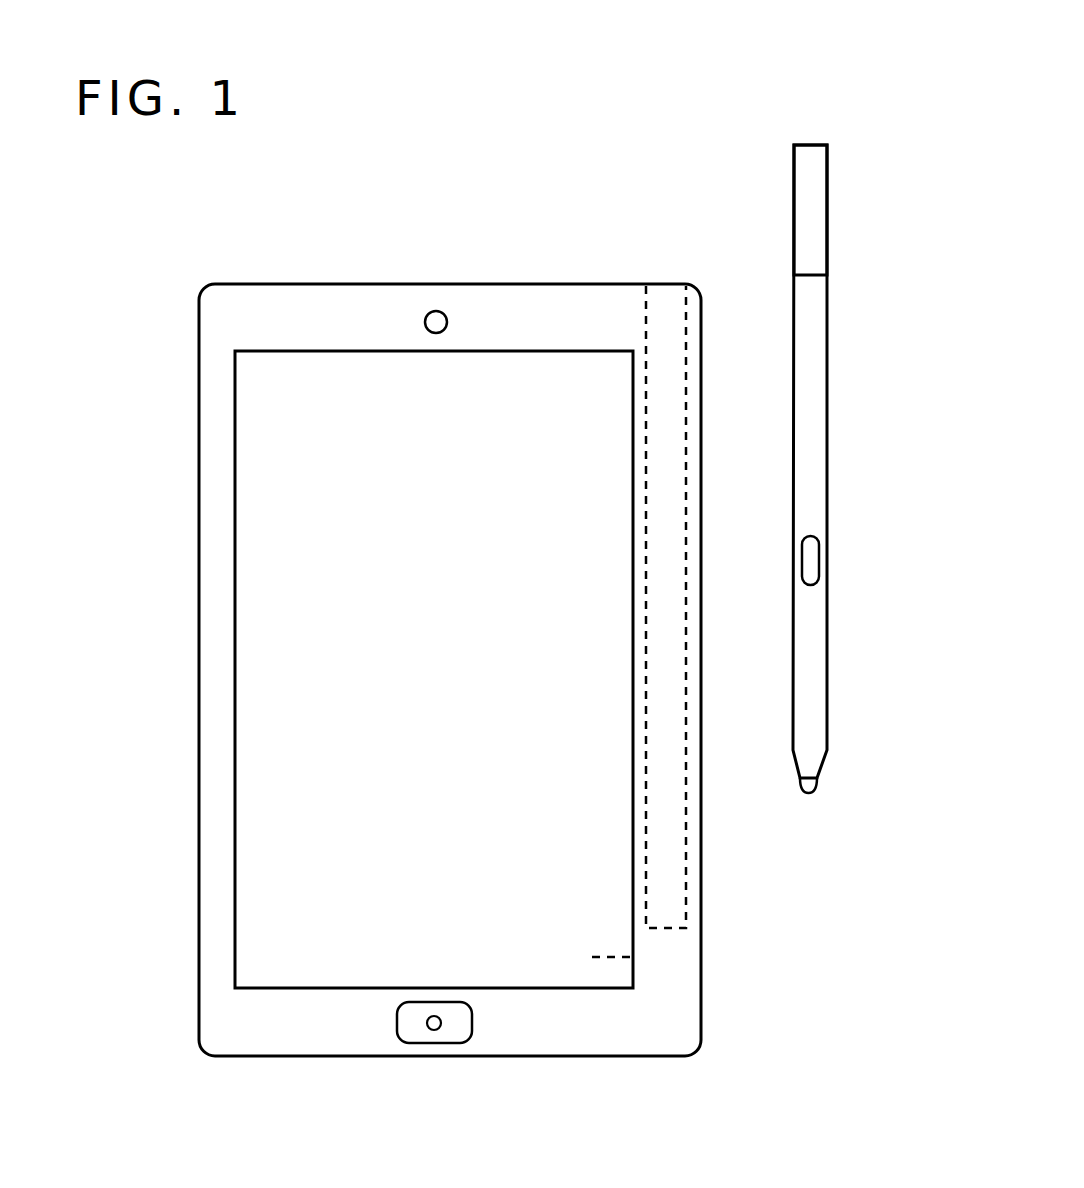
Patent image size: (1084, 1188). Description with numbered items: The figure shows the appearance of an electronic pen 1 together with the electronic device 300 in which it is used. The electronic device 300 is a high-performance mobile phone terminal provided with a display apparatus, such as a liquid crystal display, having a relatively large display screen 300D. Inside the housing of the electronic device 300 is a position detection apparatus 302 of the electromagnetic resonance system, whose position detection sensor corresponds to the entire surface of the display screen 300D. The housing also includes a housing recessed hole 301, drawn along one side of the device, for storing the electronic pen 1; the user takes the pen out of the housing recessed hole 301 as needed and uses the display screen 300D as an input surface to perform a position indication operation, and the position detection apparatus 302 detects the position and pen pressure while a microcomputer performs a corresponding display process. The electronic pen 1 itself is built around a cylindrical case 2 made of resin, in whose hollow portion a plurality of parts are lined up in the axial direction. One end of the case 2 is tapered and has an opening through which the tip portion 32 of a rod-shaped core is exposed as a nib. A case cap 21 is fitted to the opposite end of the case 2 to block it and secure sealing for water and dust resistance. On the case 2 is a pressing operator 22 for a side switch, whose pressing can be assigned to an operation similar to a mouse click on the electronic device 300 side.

The electronic pen 1 is at (836, 408).
The cylindrical case 2 is at (815, 478).
The case cap 21 is at (817, 229).
The pressing operator 22 is at (813, 563).
The tip portion 32 is at (817, 783).
The electronic device 300 is at (240, 322).
The display screen 300D is at (260, 687).
The housing recessed hole 301 is at (658, 870).
The position detection apparatus 302 is at (632, 957).